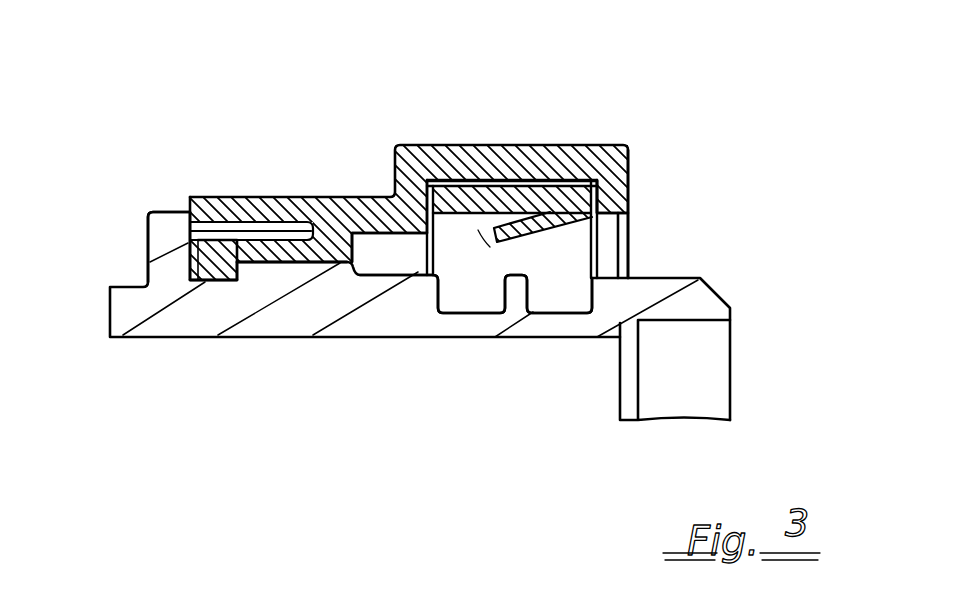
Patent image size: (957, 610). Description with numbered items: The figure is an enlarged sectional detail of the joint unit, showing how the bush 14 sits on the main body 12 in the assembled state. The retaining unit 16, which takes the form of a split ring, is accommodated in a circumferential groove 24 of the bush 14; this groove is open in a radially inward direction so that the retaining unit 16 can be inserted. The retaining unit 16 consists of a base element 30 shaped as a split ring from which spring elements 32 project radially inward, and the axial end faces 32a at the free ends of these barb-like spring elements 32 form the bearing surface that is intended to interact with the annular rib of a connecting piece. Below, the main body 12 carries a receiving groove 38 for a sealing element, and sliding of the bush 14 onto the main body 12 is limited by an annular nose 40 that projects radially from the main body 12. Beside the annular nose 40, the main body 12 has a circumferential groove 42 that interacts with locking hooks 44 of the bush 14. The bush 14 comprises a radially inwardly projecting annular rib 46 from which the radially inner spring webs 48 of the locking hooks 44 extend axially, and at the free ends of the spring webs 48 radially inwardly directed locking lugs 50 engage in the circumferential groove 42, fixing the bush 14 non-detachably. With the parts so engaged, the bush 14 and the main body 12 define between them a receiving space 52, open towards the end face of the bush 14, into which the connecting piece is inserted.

The main body 12 is at (695, 303).
The bush 14 is at (632, 163).
The retaining unit 16 is at (548, 182).
The circumferential groove 24 is at (600, 175).
The base element 30 is at (503, 145).
The spring element 32 is at (557, 227).
The axial end face 32a is at (425, 145).
The receiving groove 38 is at (470, 293).
The annular nose 40 is at (152, 243).
The circumferential groove 42 is at (210, 283).
The locking hook 44 is at (243, 197).
The annular rib 46 is at (333, 242).
The spring web 48 is at (260, 252).
The locking lug 50 is at (228, 283).
The receiving space 52 is at (396, 257).